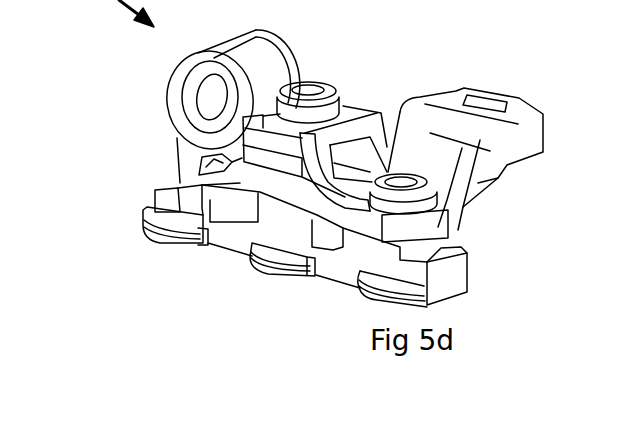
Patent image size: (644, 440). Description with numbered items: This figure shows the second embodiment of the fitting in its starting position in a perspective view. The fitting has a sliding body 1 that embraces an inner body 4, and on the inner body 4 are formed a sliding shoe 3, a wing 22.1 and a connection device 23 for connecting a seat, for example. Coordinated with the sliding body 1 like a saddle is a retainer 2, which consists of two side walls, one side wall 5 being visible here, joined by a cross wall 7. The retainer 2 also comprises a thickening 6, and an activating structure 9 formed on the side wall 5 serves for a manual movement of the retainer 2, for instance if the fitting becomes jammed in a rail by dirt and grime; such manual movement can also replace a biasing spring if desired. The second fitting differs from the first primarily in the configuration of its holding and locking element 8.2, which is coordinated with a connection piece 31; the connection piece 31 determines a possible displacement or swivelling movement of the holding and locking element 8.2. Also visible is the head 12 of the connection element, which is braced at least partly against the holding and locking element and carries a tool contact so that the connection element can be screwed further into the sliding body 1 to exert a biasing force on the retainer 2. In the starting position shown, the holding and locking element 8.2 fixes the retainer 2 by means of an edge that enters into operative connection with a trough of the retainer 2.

The sliding body 1 is at (228, 240).
The retainer 2 is at (218, 175).
The sliding shoe 3 is at (280, 258).
The inner body 4 is at (455, 270).
The side wall 5 is at (382, 148).
The thickening 6 is at (322, 228).
The cross wall 7 is at (340, 136).
The holding and locking element 8.2 is at (528, 148).
The activating structure 9 is at (258, 160).
The head 12 is at (330, 92).
The wing 22.1 is at (165, 197).
The connection device 23 is at (177, 80).
The connection piece 31 is at (423, 188).